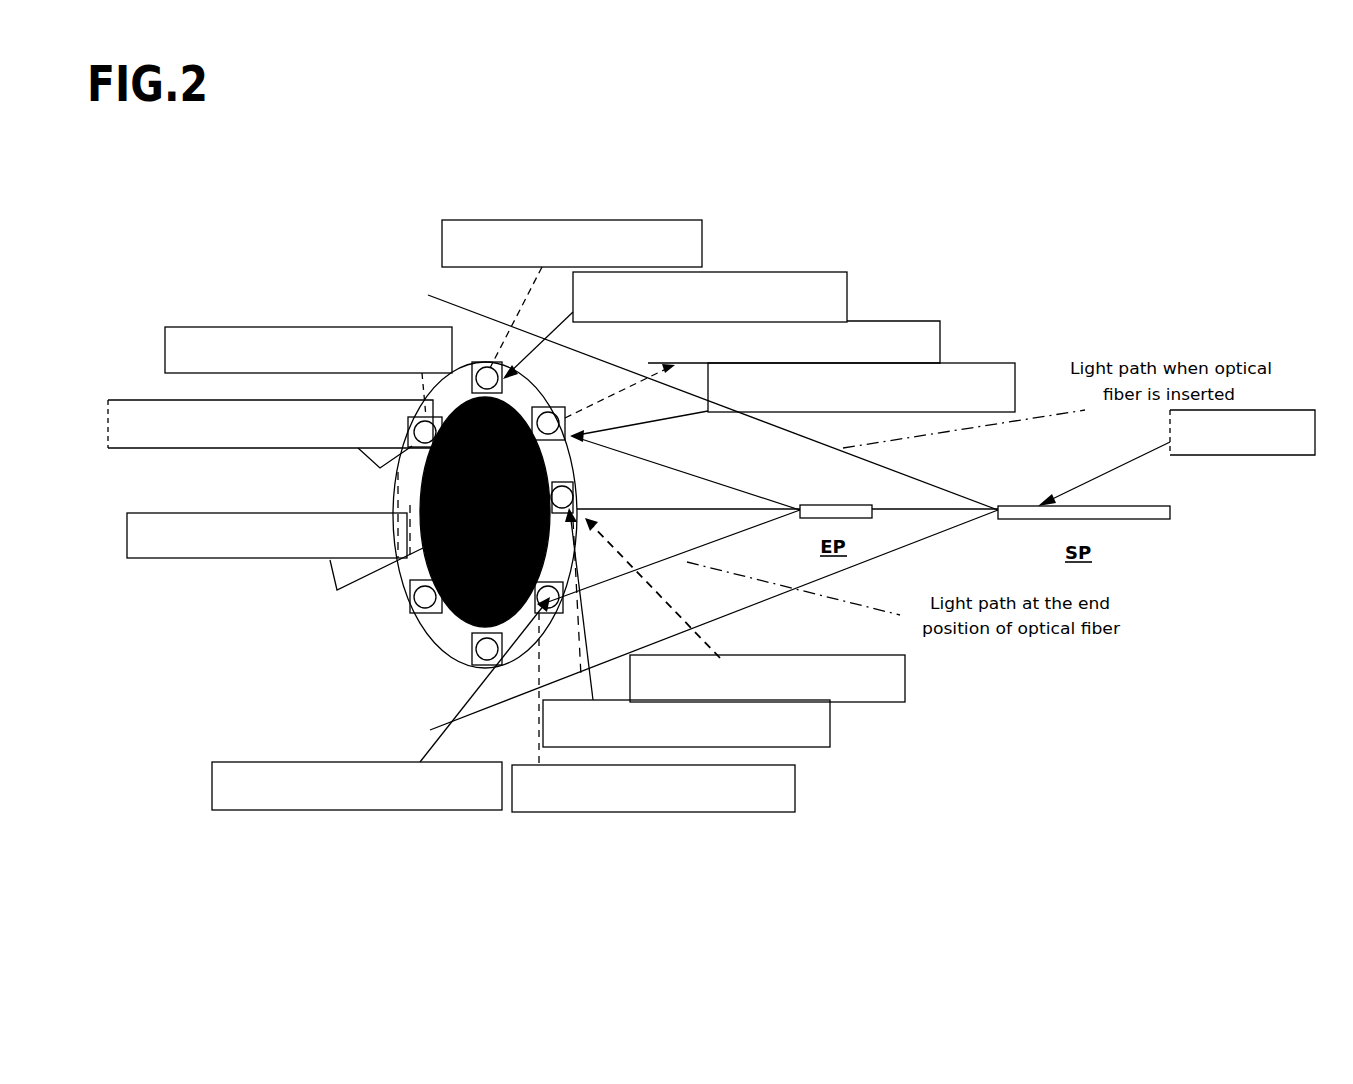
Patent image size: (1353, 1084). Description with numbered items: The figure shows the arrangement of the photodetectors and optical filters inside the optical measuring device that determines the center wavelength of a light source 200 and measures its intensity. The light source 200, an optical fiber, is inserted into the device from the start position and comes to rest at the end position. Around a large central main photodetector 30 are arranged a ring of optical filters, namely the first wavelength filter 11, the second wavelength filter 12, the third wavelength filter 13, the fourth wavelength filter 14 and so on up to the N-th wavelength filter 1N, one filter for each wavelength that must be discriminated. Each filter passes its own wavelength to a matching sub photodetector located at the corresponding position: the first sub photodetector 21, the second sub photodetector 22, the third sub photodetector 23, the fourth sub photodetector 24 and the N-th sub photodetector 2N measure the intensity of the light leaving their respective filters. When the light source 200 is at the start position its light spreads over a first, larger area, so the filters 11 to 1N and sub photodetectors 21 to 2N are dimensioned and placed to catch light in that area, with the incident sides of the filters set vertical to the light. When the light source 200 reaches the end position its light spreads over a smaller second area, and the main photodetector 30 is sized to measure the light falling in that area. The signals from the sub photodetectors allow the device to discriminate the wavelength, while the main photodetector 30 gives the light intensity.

The first wavelength filter 11 is at (722, 275).
The second wavelength filter 12 is at (977, 363).
The third wavelength filter 13 is at (830, 737).
The fourth wavelength filter 14 is at (384, 812).
The N-th wavelength filter 1N is at (288, 448).
The first sub photodetector 21 is at (568, 220).
The second sub photodetector 22 is at (848, 318).
The third sub photodetector 23 is at (905, 688).
The fourth sub photodetector 24 is at (640, 812).
The N-th sub photodetector 2N is at (307, 327).
The main photodetector 30 is at (312, 560).
The light source 200 is at (1257, 457).